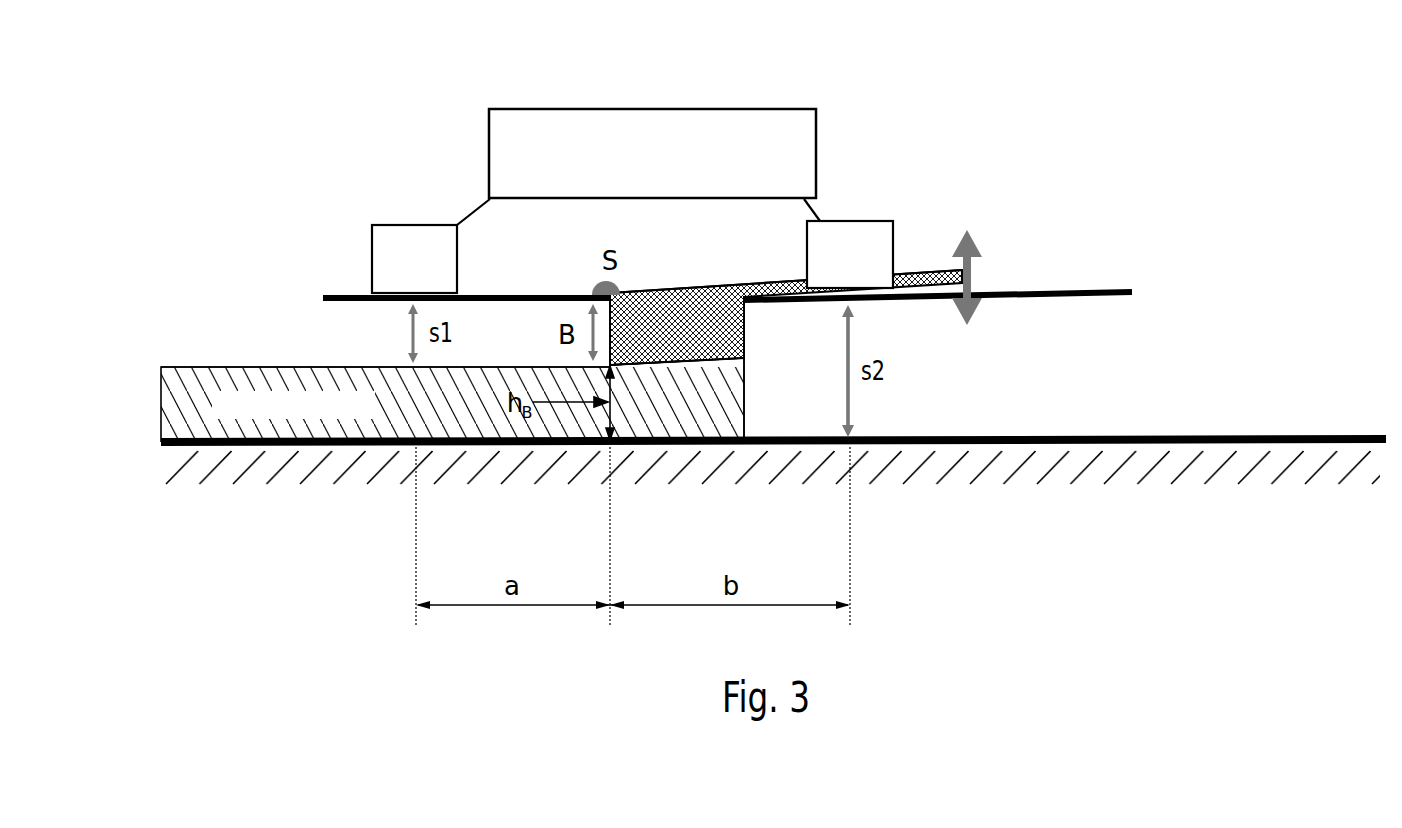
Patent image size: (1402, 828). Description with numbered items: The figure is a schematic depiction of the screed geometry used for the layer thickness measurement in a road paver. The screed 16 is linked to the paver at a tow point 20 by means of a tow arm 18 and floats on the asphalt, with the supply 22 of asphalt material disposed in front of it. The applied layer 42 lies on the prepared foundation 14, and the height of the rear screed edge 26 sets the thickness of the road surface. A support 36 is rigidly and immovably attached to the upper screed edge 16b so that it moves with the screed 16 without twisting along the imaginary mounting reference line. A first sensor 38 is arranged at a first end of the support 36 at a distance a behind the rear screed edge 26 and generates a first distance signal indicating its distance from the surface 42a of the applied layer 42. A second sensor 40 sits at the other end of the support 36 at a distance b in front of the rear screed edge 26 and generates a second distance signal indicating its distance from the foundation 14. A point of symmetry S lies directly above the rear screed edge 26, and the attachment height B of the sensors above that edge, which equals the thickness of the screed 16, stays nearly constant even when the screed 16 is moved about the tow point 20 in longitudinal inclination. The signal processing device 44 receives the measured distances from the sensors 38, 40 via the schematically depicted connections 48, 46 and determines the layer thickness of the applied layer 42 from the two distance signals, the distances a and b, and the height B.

The foundation 14 is at (1330, 434).
The screed 16 is at (745, 325).
The upper screed edge 16b is at (676, 290).
The tow arm 18 is at (942, 272).
The tow point 20 is at (973, 273).
The supply of asphalt material 22 is at (693, 410).
The rear screed edge 26 is at (614, 372).
The support 36 is at (488, 293).
The first sensor 38 is at (371, 263).
The second sensor 40 is at (873, 221).
The applied layer 42 is at (160, 422).
The surface of the applied layer 42a is at (238, 365).
The signal processing device 44 is at (651, 109).
The connection 46 is at (813, 205).
The connection 48 is at (473, 212).